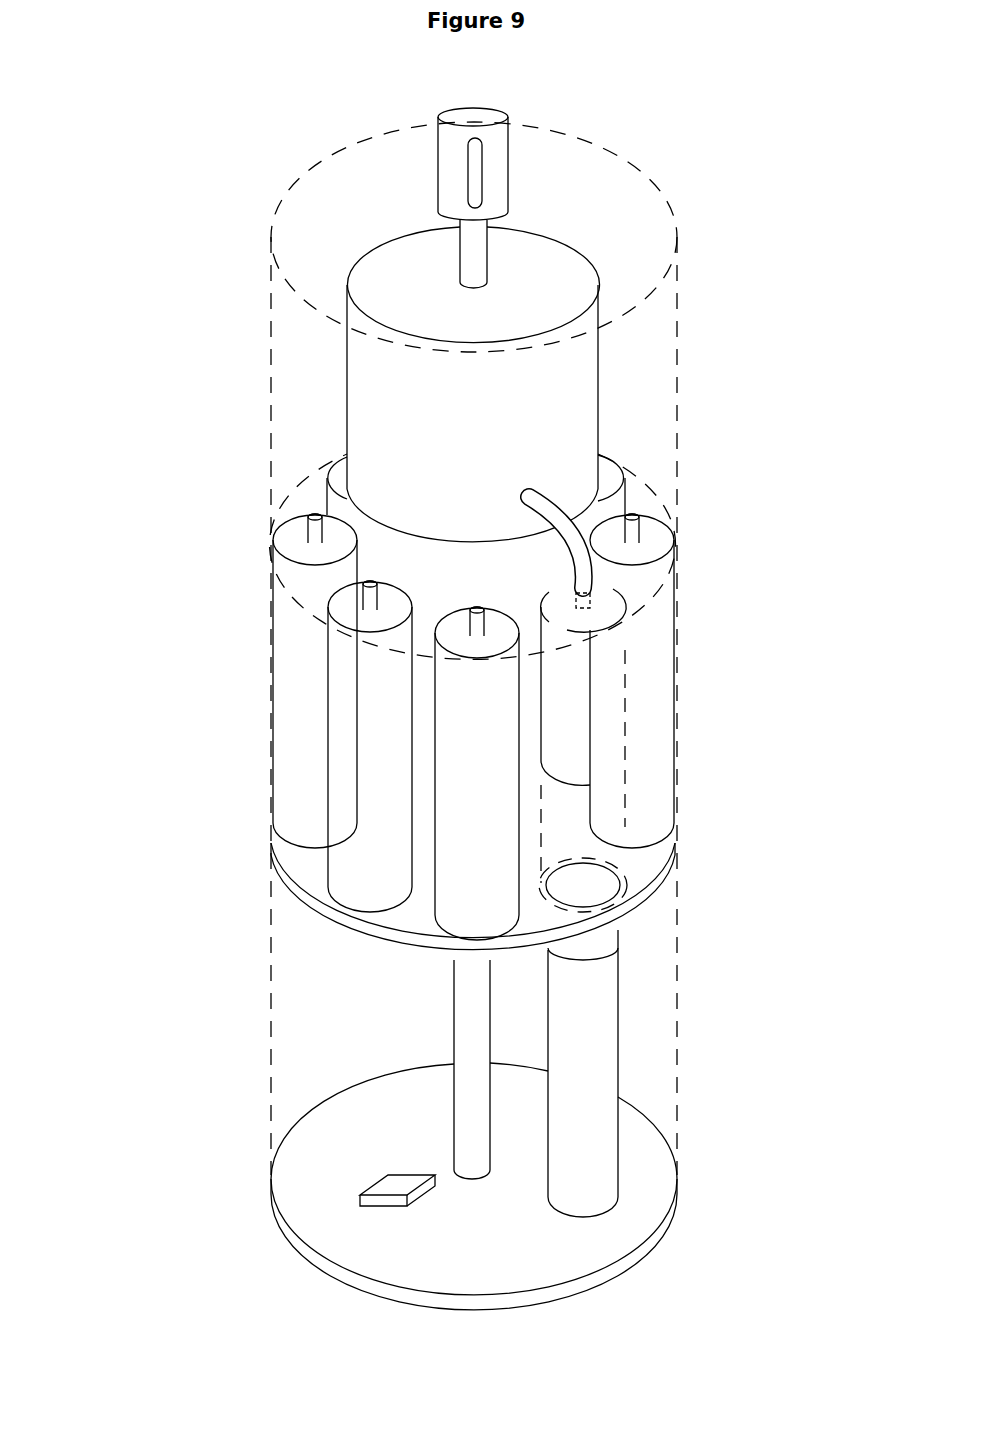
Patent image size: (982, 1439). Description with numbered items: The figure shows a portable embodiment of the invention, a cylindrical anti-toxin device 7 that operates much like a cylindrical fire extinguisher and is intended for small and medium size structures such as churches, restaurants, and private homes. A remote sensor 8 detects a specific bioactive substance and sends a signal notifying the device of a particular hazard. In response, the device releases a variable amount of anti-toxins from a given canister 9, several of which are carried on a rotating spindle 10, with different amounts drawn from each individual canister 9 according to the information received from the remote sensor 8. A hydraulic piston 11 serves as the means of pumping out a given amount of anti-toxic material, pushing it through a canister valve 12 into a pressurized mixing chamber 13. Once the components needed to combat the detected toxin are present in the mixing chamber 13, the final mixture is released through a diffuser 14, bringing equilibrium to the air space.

The cylindrical anti-toxin device 7 is at (268, 637).
The remote sensor 8 is at (388, 1185).
The canister 9 is at (380, 762).
The rotating spindle 10 is at (670, 877).
The hydraulic piston 11 is at (597, 1016).
The canister valve 12 is at (591, 590).
The pressurized mixing chamber 13 is at (548, 418).
The diffuser 14 is at (436, 181).